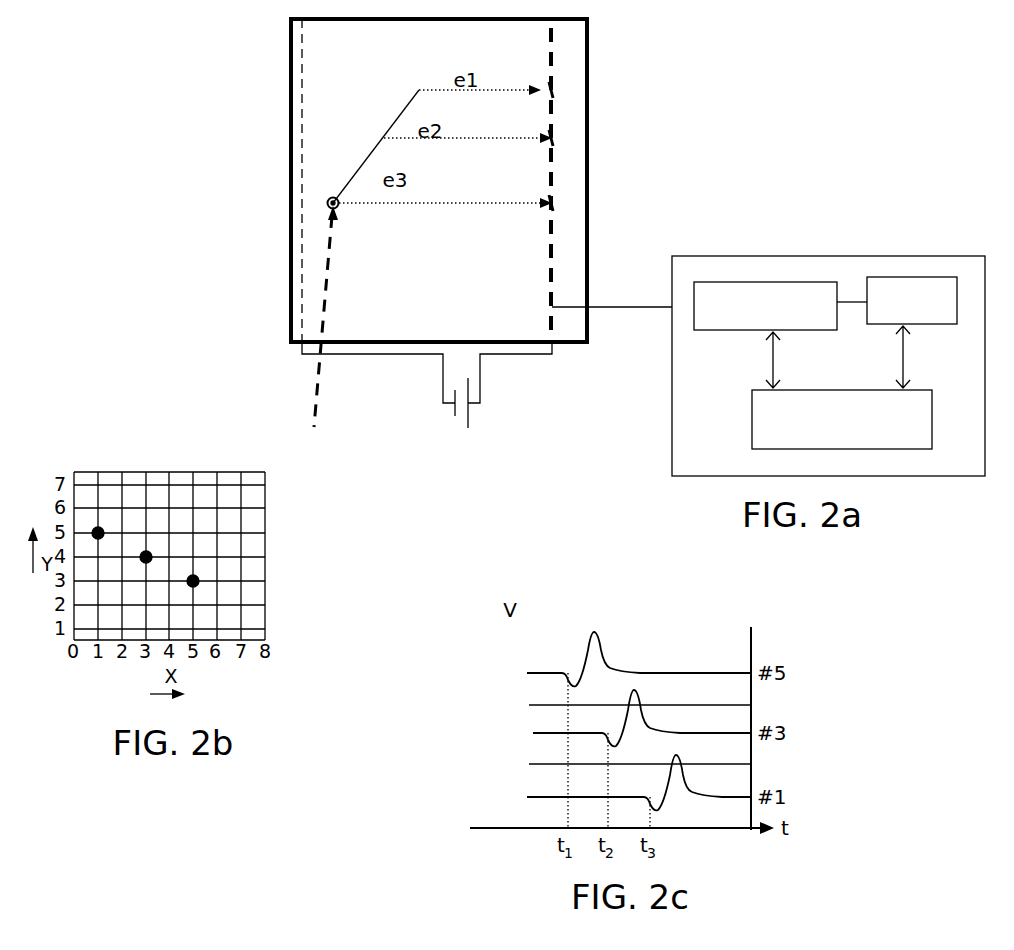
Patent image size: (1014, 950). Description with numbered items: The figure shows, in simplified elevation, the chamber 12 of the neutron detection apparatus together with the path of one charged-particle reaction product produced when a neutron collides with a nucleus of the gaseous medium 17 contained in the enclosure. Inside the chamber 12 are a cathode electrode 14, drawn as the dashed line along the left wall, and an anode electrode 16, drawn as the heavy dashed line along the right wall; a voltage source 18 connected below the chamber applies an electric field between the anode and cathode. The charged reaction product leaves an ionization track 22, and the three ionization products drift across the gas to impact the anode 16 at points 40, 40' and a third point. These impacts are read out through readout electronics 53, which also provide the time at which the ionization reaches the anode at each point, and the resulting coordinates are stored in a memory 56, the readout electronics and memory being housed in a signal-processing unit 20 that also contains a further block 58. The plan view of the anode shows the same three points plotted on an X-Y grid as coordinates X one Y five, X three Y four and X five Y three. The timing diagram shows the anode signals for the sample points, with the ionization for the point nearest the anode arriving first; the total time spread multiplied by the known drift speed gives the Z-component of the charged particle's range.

In FIG. 2A, the enclosure 12 is at (589, 87).
In FIG. 2A, the cathode electrode 14 is at (300, 101).
In FIG. 2A, the anode electrode 16 is at (553, 320).
In FIG. 2B, the anode electrode 16 is at (290, 586).
In FIG. 2A, the gaseous medium 17 is at (508, 280).
In FIG. 2A, the voltage source 18 is at (427, 400).
In FIG. 2A, the signal processing unit 20 is at (828, 316).
In FIG. 2A, the particle trajectory 22 is at (326, 261).
In FIG. 2A, the impact point 40 is at (563, 207).
In FIG. 2B, the impact point 40 is at (69, 467).
In FIG. 2A, the impact point 40' is at (568, 138).
In FIG. 2B, the impact point 40' is at (129, 489).
In FIG. 2A, the readout electronics 53 is at (765, 306).
In FIG. 2A, the memory 56 is at (912, 300).
In FIG. 2A, the memory / controller 58 is at (842, 419).